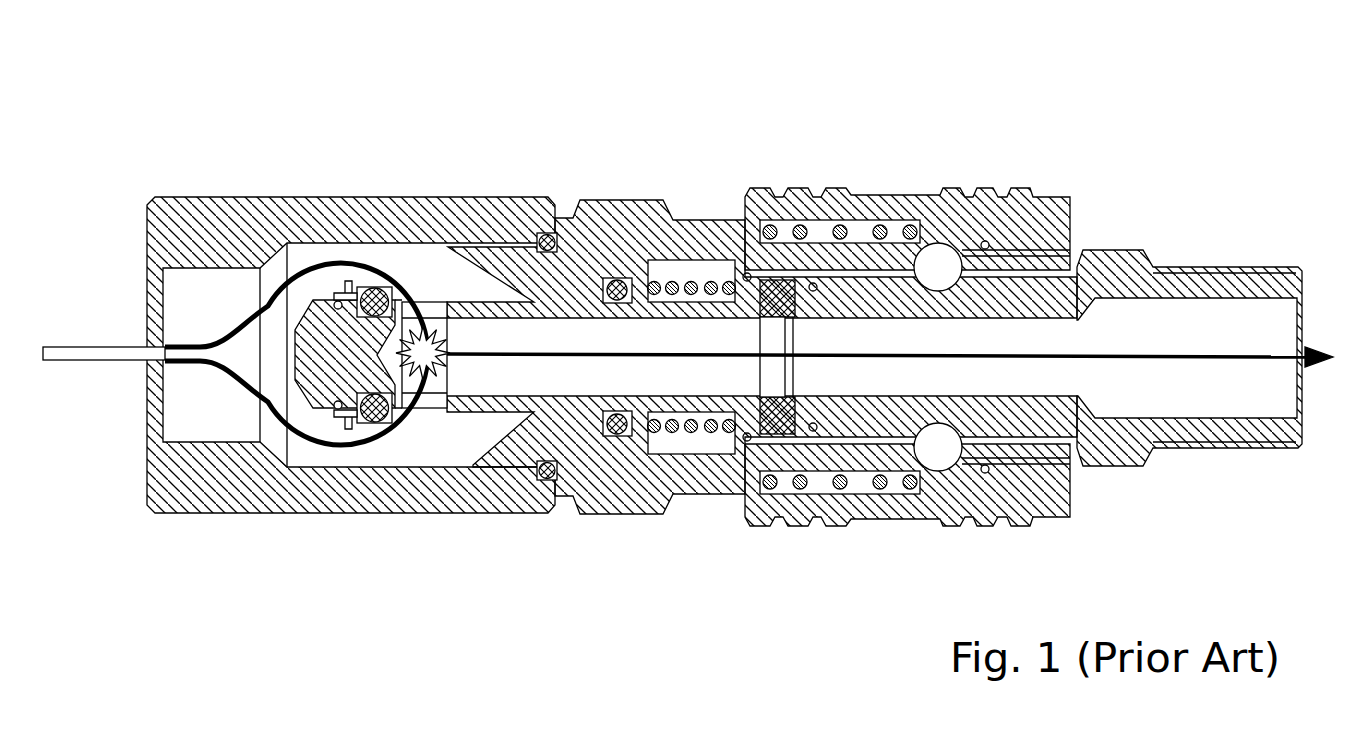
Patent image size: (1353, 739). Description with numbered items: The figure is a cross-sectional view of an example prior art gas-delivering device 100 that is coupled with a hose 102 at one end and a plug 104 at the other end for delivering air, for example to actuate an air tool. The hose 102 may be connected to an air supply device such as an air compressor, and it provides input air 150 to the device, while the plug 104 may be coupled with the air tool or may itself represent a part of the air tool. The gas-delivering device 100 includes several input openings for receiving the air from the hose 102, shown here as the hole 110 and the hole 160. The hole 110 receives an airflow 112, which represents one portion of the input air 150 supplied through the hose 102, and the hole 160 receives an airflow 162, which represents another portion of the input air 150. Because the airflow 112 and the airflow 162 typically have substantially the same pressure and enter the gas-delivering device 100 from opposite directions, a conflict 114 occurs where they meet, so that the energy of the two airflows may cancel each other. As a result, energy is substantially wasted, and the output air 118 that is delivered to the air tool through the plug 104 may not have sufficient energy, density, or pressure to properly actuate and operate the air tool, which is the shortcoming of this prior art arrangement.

The gas-delivering device 100 is at (477, 270).
The hose 102 is at (258, 222).
The plug 104 is at (1130, 253).
The hole 110 is at (425, 305).
The airflow 112 is at (353, 257).
The conflict 114 is at (430, 392).
The output air 118 is at (898, 358).
The input air 150 is at (85, 362).
The hole 160 is at (443, 412).
The airflow 162 is at (348, 452).